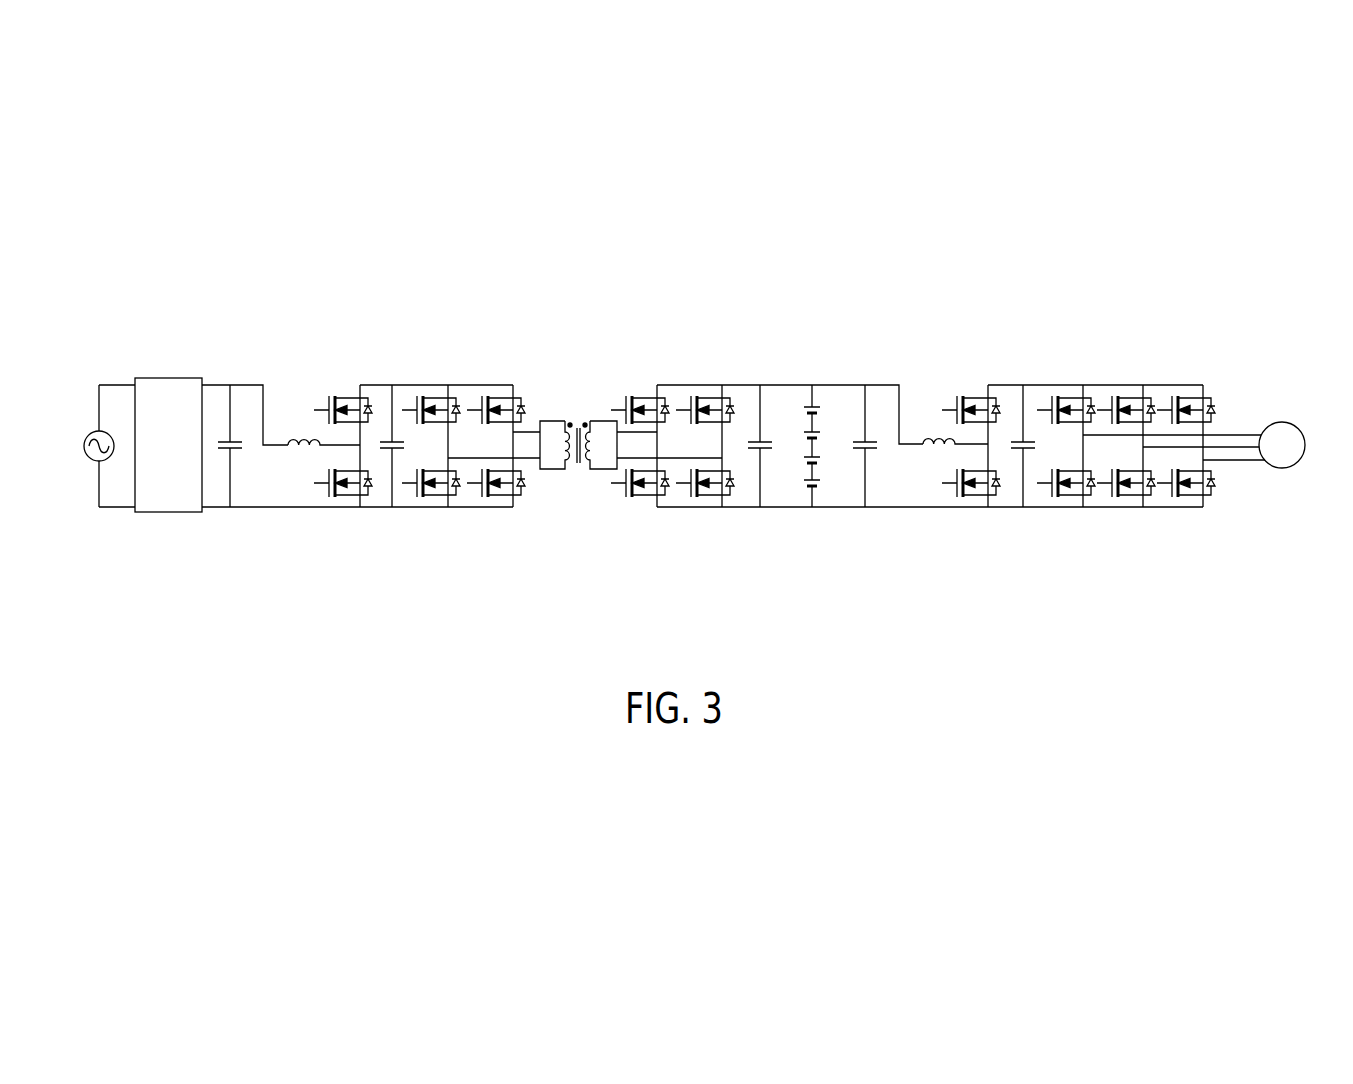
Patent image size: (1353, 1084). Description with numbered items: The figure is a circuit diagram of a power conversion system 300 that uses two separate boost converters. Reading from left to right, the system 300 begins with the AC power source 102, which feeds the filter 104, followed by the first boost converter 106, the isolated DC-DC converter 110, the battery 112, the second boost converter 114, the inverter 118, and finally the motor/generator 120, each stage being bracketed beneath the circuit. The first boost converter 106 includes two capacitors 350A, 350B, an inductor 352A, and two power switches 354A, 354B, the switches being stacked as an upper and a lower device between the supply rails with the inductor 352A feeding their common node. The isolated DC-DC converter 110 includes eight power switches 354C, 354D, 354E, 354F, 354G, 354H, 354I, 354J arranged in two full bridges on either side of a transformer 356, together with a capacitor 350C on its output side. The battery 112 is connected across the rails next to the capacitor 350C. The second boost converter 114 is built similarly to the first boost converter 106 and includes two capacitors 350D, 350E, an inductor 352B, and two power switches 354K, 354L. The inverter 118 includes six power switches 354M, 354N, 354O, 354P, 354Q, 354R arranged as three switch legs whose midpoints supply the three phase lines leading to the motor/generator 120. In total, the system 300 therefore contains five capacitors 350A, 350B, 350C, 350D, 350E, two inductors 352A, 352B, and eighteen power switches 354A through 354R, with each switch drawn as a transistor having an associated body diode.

The system 300 is at (127, 355).
The AC power source 102 is at (75, 519).
The filter 104 is at (208, 519).
The first boost converter 106 is at (410, 519).
The isolated DC-DC converter 110 is at (420, 519).
The battery 112 is at (787, 519).
The second boost converter 114 is at (847, 519).
The inverter 118 is at (1050, 519).
The motor/generator 120 is at (1258, 519).
The capacitor 350A is at (238, 433).
The capacitor 350B is at (398, 435).
The capacitor 350C is at (768, 430).
The capacitor 350D is at (873, 428).
The capacitor 350E is at (1030, 433).
The inductor 352A is at (297, 420).
The inductor 352B is at (930, 427).
The power switch 354A is at (368, 383).
The power switch 354B is at (367, 509).
The power switch 354C is at (462, 383).
The power switch 354D is at (513, 383).
The power switch 354E is at (452, 509).
The power switch 354F is at (502, 509).
The power switch 354G is at (670, 383).
The power switch 354H is at (720, 383).
The power switch 354I is at (667, 509).
The power switch 354J is at (717, 509).
The power switch 354K is at (997, 383).
The power switch 354L is at (997, 509).
The power switch 354M is at (1083, 383).
The power switch 354N is at (1140, 383).
The power switch 354O is at (1200, 383).
The power switch 354P is at (1083, 509).
The power switch 354Q is at (1152, 509).
The power switch 354R is at (1182, 509).
The transformer 356 is at (578, 403).